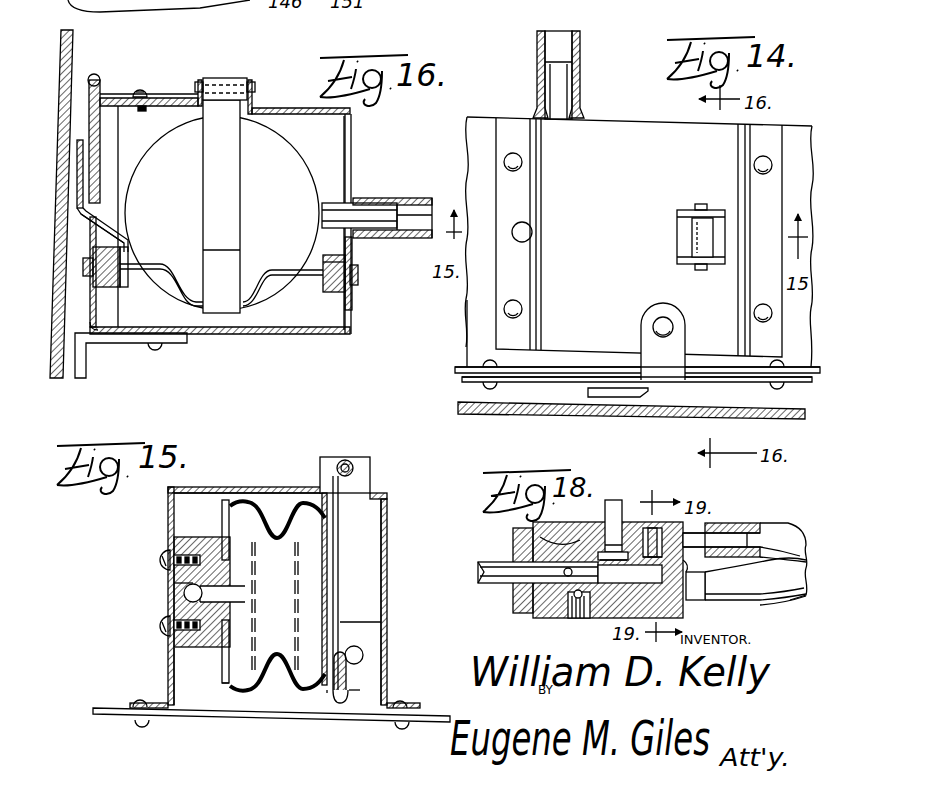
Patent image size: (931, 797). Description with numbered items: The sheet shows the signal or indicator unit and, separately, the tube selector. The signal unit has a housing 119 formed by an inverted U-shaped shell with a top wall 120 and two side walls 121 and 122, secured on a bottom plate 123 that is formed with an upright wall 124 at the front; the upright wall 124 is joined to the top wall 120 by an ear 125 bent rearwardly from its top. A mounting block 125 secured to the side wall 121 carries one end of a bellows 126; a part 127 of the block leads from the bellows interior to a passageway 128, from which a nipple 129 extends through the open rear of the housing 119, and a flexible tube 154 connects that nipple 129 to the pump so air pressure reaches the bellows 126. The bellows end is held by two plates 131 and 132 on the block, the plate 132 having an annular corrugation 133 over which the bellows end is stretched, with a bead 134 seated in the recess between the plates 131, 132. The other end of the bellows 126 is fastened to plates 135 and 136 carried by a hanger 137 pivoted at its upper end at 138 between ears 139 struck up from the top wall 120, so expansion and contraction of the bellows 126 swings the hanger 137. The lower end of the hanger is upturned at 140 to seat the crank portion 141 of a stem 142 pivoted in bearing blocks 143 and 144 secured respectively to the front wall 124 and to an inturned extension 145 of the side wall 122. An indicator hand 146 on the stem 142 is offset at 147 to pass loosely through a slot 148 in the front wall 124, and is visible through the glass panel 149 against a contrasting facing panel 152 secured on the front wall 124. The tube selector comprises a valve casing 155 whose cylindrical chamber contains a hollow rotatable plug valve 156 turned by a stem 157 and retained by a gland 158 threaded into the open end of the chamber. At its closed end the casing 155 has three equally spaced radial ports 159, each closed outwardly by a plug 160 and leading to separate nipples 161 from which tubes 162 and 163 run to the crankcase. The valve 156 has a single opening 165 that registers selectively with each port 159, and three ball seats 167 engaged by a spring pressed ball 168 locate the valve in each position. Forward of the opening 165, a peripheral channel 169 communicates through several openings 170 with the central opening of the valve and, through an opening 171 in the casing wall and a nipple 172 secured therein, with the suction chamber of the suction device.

In FIG. 16, the housing 119 is at (356, 125).
In FIG. 14, the housing 119 is at (638, 97).
In FIG. 15, the housing 119 is at (392, 553).
In FIG. 16, the top wall 120 is at (257, 110).
In FIG. 14, the top wall 120 is at (622, 188).
In FIG. 15, the top wall 120 is at (258, 487).
In FIG. 16, the side wall 121 is at (341, 170).
In FIG. 15, the side wall 121 is at (168, 660).
In FIG. 15, the side wall 122 is at (388, 585).
In FIG. 16, the bottom plate 123 is at (226, 335).
In FIG. 14, the bottom plate 123 is at (465, 306).
In FIG. 15, the bottom plate 123 is at (341, 719).
In FIG. 16, the upright wall 124 is at (93, 302).
In FIG. 14, the upright wall 124 is at (582, 338).
In FIG. 16, the mounting block 125 is at (120, 95).
In FIG. 14, the mounting block 125 is at (644, 312).
In FIG. 15, the mounting block 125 is at (170, 598).
In FIG. 15, the bellows 126 is at (263, 670).
In FIG. 15, the part 127 is at (226, 595).
In FIG. 15, the passageway 128 is at (170, 585).
In FIG. 16, the nipple 129 is at (366, 232).
In FIG. 14, the nipple 129 is at (564, 78).
In FIG. 15, the plate 131 is at (222, 653).
In FIG. 15, the plate 132 is at (225, 660).
In FIG. 15, the annular corrugation 133 is at (272, 607).
In FIG. 15, the bead 134 is at (233, 505).
In FIG. 15, the plate 135 is at (289, 607).
In FIG. 16, the plate 136 is at (292, 219).
In FIG. 15, the plate 136 is at (328, 548).
In FIG. 16, the hanger 137 is at (235, 181).
In FIG. 14, the hanger 137 is at (691, 241).
In FIG. 15, the hanger 137 is at (330, 580).
In FIG. 16, the pivot 138 is at (195, 86).
In FIG. 14, the pivot 138 is at (699, 204).
In FIG. 15, the pivot 138 is at (347, 461).
In FIG. 16, the ears 139 is at (204, 79).
In FIG. 14, the ears 139 is at (690, 212).
In FIG. 15, the ears 139 is at (371, 467).
In FIG. 16, the upturned lower end 140 is at (203, 258).
In FIG. 15, the upturned lower end 140 is at (348, 655).
In FIG. 16, the crank portion 141 is at (243, 314).
In FIG. 15, the crank portion 141 is at (329, 698).
In FIG. 16, the stem 142 is at (310, 276).
In FIG. 16, the bearing block 143 is at (100, 290).
In FIG. 16, the bearing block 144 is at (342, 262).
In FIG. 15, the bearing block 144 is at (362, 660).
In FIG. 16, the inturned extension 145 is at (353, 300).
In FIG. 15, the inturned extension 145 is at (388, 698).
In FIG. 16, the indicator hand 146 is at (77, 160).
In FIG. 14, the indicator hand 146 is at (612, 394).
In FIG. 16, the offset 147 is at (110, 227).
In FIG. 16, the slot 148 is at (78, 224).
In FIG. 16, the glass panel 149 is at (53, 352).
In FIG. 14, the glass panel 149 is at (696, 412).
In FIG. 16, the facing panel 152 is at (96, 100).
In FIG. 14, the facing panel 152 is at (540, 370).
In FIG. 16, the flexible tube 154 is at (430, 178).
In FIG. 14, the flexible tube 154 is at (537, 48).
In FIG. 18, the valve casing 155 is at (532, 616).
In FIG. 18, the plug type valve 156 is at (568, 542).
In FIG. 18, the stem 157 is at (492, 562).
In FIG. 18, the gland 158 is at (514, 596).
In FIG. 18, the radial ports 159 is at (640, 522).
In FIG. 18, the plug 160 is at (652, 527).
In FIG. 18, the nipples 161 is at (695, 534).
In FIG. 18, the tube 162 is at (778, 533).
In FIG. 18, the tube 163 is at (768, 600).
In FIG. 18, the opening 165 is at (755, 579).
In FIG. 18, the ball seats 167 is at (580, 619).
In FIG. 18, the spring pressed ball 168 is at (565, 618).
In FIG. 18, the peripheral channel 169 is at (691, 600).
In FIG. 18, the openings 170 is at (634, 581).
In FIG. 18, the opening 171 is at (600, 548).
In FIG. 18, the nipple 172 is at (612, 500).